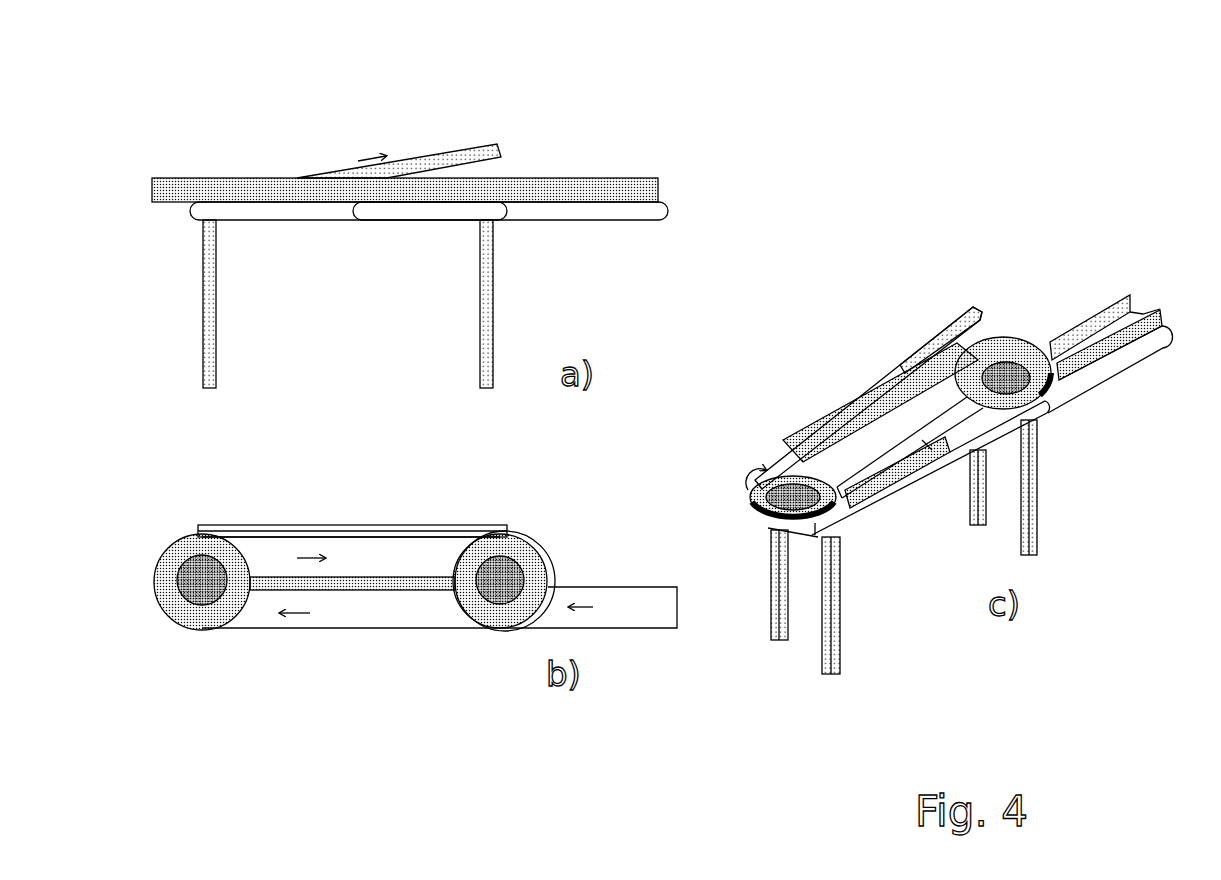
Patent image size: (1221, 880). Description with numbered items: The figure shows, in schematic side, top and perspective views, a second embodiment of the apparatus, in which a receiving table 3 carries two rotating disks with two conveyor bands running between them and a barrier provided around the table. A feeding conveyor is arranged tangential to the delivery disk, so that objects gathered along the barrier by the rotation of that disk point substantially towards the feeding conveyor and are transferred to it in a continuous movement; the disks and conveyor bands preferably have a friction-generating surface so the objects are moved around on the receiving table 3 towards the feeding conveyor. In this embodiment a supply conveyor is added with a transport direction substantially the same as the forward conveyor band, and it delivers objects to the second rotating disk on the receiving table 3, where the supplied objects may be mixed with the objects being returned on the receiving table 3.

The receiving table 3 is at (385, 642).